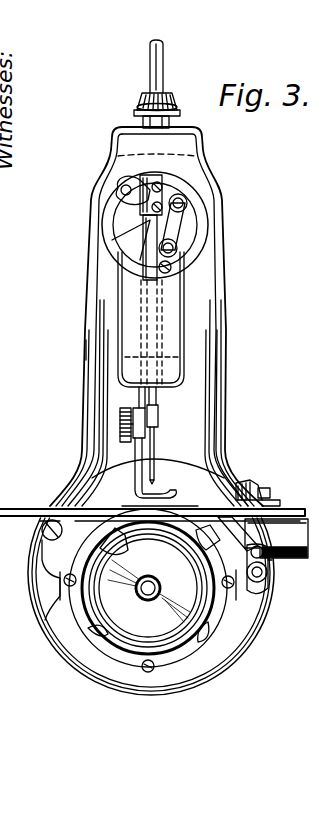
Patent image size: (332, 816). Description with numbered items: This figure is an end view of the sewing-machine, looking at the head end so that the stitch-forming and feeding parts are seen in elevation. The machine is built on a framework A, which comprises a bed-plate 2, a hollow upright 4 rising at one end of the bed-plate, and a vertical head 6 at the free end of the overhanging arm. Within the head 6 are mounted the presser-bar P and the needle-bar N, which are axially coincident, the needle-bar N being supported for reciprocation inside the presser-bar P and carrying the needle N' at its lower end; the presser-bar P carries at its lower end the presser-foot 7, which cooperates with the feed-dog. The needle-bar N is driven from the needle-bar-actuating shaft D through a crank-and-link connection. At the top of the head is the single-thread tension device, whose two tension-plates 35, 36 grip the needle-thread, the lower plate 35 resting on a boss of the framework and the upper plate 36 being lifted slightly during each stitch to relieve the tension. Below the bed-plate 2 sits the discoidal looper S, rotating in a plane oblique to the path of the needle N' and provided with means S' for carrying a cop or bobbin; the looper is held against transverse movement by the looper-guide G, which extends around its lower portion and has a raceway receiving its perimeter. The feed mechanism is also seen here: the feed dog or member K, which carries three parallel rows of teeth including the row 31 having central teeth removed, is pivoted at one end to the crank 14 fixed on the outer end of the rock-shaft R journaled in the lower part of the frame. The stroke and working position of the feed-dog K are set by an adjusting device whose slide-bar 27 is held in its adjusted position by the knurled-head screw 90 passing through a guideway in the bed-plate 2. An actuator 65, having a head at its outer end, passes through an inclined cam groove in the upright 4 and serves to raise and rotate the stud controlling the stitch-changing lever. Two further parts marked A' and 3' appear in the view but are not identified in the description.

The tension-plate 36 is at (170, 114).
The tension-plate 35 is at (143, 118).
The presser-bar P is at (160, 176).
The needle-bar-actuating shaft D is at (136, 228).
The needle-bar N is at (120, 327).
The needle N' is at (165, 471).
The head 6 is at (151, 319).
The upright 4 is at (84, 349).
The framework A is at (152, 316).
The bed plate A' is at (152, 503).
The row of teeth 31 is at (137, 473).
The presser-foot 7 is at (162, 499).
The actuator 65 is at (250, 486).
The screw 90 is at (272, 505).
The bed-plate 2 is at (285, 535).
The shuttle race casing 3' is at (137, 606).
The feed dog or member K is at (255, 546).
The means for carrying a cop or bobbin S' is at (151, 580).
The rock-shaft R is at (268, 574).
The slide-bar 27 is at (315, 575).
The crank 14 is at (266, 580).
The looper-guide G is at (208, 633).
The looper S is at (149, 618).